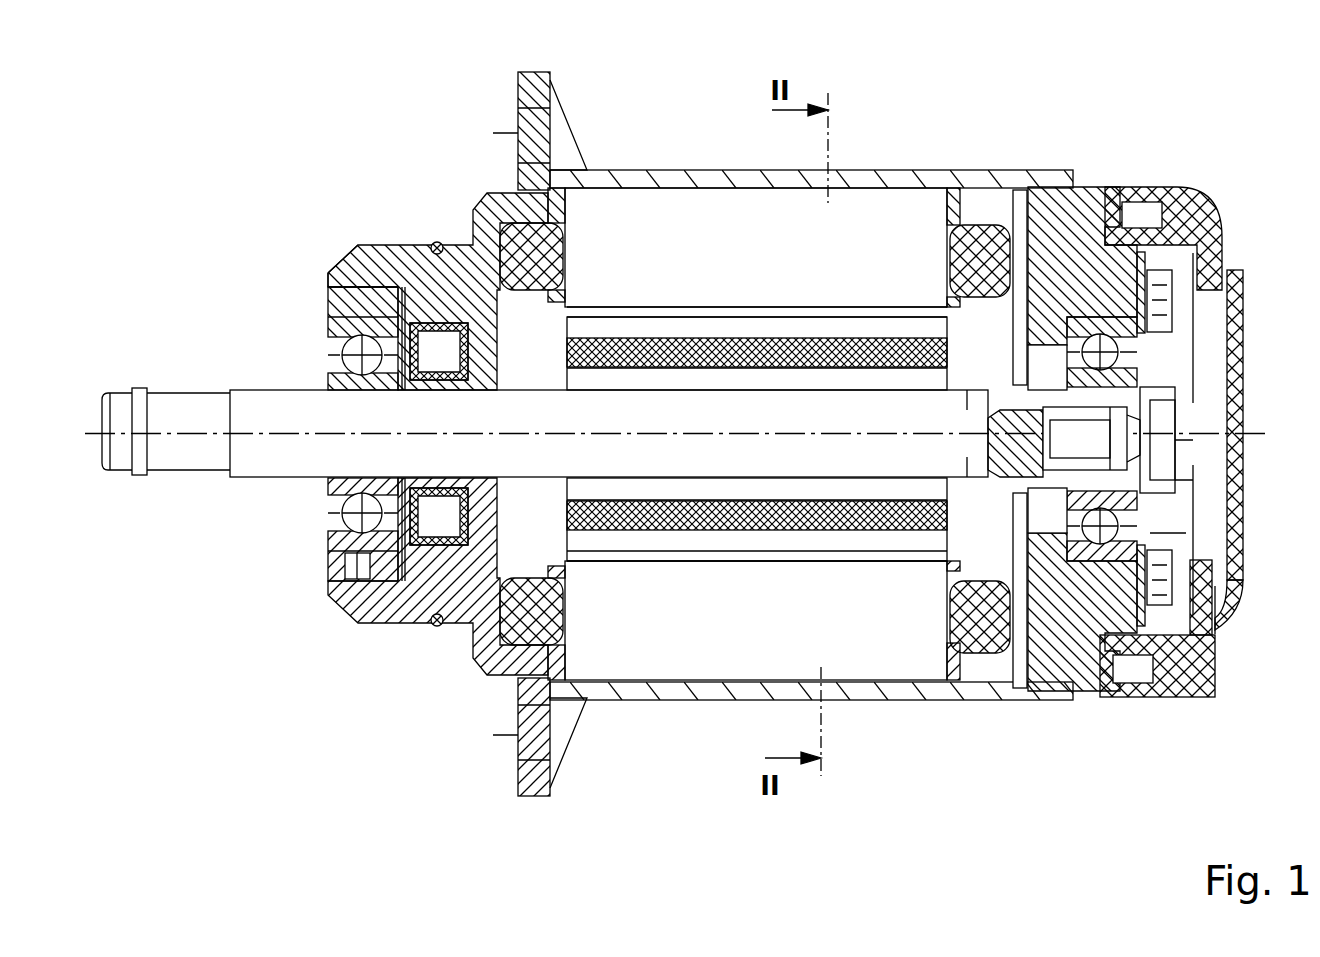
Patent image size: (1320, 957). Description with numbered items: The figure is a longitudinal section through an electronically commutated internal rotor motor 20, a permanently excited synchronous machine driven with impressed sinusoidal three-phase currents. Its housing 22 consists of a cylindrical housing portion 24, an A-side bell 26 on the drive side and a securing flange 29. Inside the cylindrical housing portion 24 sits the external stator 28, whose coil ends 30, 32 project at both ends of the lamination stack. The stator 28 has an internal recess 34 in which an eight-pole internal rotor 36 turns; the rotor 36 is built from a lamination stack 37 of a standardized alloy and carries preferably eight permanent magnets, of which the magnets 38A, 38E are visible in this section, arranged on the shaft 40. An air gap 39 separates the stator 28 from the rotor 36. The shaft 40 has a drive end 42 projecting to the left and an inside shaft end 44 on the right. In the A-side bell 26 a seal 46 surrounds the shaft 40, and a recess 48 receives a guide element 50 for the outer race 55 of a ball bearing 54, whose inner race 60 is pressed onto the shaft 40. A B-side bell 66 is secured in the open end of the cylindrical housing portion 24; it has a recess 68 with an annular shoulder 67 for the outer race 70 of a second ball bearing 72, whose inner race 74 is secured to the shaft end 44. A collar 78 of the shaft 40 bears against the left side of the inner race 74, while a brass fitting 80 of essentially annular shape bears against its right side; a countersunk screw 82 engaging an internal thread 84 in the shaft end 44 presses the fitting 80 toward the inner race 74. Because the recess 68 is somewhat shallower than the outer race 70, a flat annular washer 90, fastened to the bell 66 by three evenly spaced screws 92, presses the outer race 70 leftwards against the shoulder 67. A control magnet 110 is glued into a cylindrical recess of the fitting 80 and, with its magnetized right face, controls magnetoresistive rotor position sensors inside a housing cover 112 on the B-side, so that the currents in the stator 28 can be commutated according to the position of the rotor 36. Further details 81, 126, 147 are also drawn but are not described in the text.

The electronically commutated internal rotor motor 20 is at (680, 150).
The housing 22 is at (472, 185).
The cylindrical housing portion 24 is at (614, 175).
The A-side bell 26 is at (400, 605).
The external stator 28 is at (722, 245).
The securing flange 29 is at (556, 90).
The coil end 30 is at (530, 293).
The coil end 32 is at (978, 228).
The internal recess 34 is at (612, 305).
The internal rotor 36 is at (762, 380).
The lamination stack 37 is at (640, 575).
The permanent magnet 38A is at (818, 338).
The permanent magnet 38E is at (790, 530).
The air gap 39 is at (668, 317).
The shaft 40 is at (629, 473).
The drive end 42 is at (175, 410).
The inside shaft end 44 is at (1040, 495).
The seal 46 is at (440, 320).
The recess 48 is at (328, 283).
The guide element 50 is at (327, 292).
The ball bearing 54 is at (262, 521).
The outer race 55 is at (327, 330).
The inner race 60 is at (327, 353).
The B-side bell 66 is at (1085, 200).
The annular shoulder 67 is at (1020, 540).
The recess 68 is at (1072, 696).
The outer race 70 is at (1195, 610).
The ball bearing 72 is at (1150, 533).
The inner race 74 is at (1189, 521).
The collar 78 is at (1040, 378).
The fitting 80 is at (1232, 390).
The sensor magnet 81 is at (1193, 392).
The countersunk screw 82 is at (995, 418).
The internal thread 84 is at (995, 452).
The washer 90 is at (1193, 202).
The screws 92 is at (1223, 265).
The control magnet 110 is at (1178, 472).
The housing cover 112 is at (1237, 630).
The rotor yoke 126 is at (878, 398).
The circuit board 147 is at (1018, 248).